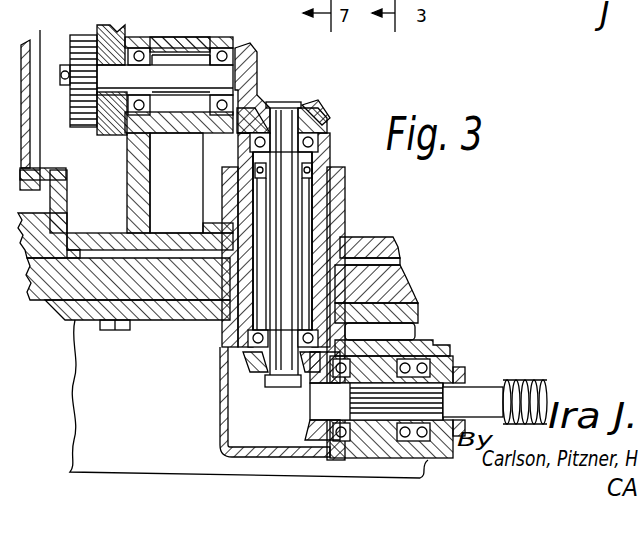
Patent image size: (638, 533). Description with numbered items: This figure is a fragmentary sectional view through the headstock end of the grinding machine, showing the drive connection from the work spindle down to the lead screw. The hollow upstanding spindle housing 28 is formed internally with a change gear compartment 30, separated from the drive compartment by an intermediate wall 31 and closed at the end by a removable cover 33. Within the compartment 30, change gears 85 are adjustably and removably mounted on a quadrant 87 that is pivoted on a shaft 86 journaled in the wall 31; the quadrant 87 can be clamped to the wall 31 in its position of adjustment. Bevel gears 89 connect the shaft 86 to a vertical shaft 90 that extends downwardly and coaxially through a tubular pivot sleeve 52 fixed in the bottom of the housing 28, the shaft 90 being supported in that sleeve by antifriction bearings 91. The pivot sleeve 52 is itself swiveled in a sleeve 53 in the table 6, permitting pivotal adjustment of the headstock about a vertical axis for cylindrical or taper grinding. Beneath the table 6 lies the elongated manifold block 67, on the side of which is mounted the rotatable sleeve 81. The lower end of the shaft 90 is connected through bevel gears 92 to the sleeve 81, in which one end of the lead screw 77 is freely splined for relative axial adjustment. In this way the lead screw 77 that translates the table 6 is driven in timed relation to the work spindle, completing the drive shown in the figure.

The removable cover 33 is at (33, 33).
The change gears 85 is at (80, 35).
The shaft 86 is at (168, 72).
The quadrant 87 is at (115, 135).
The bevel gears 89 is at (270, 92).
The antifriction bearings 91 is at (255, 140).
The change gear compartment 30 is at (118, 163).
The intermediate wall 31 is at (152, 196).
The vertical shaft 90 is at (300, 193).
The tubular pivot sleeve 52 is at (327, 210).
The spindle housing 28 is at (398, 243).
The table 6 is at (410, 285).
The sleeve 53 is at (220, 286).
The manifold block 67 is at (86, 360).
The bevel gears 92 is at (296, 398).
The sleeve 81 is at (455, 382).
The lead screw 77 is at (523, 384).